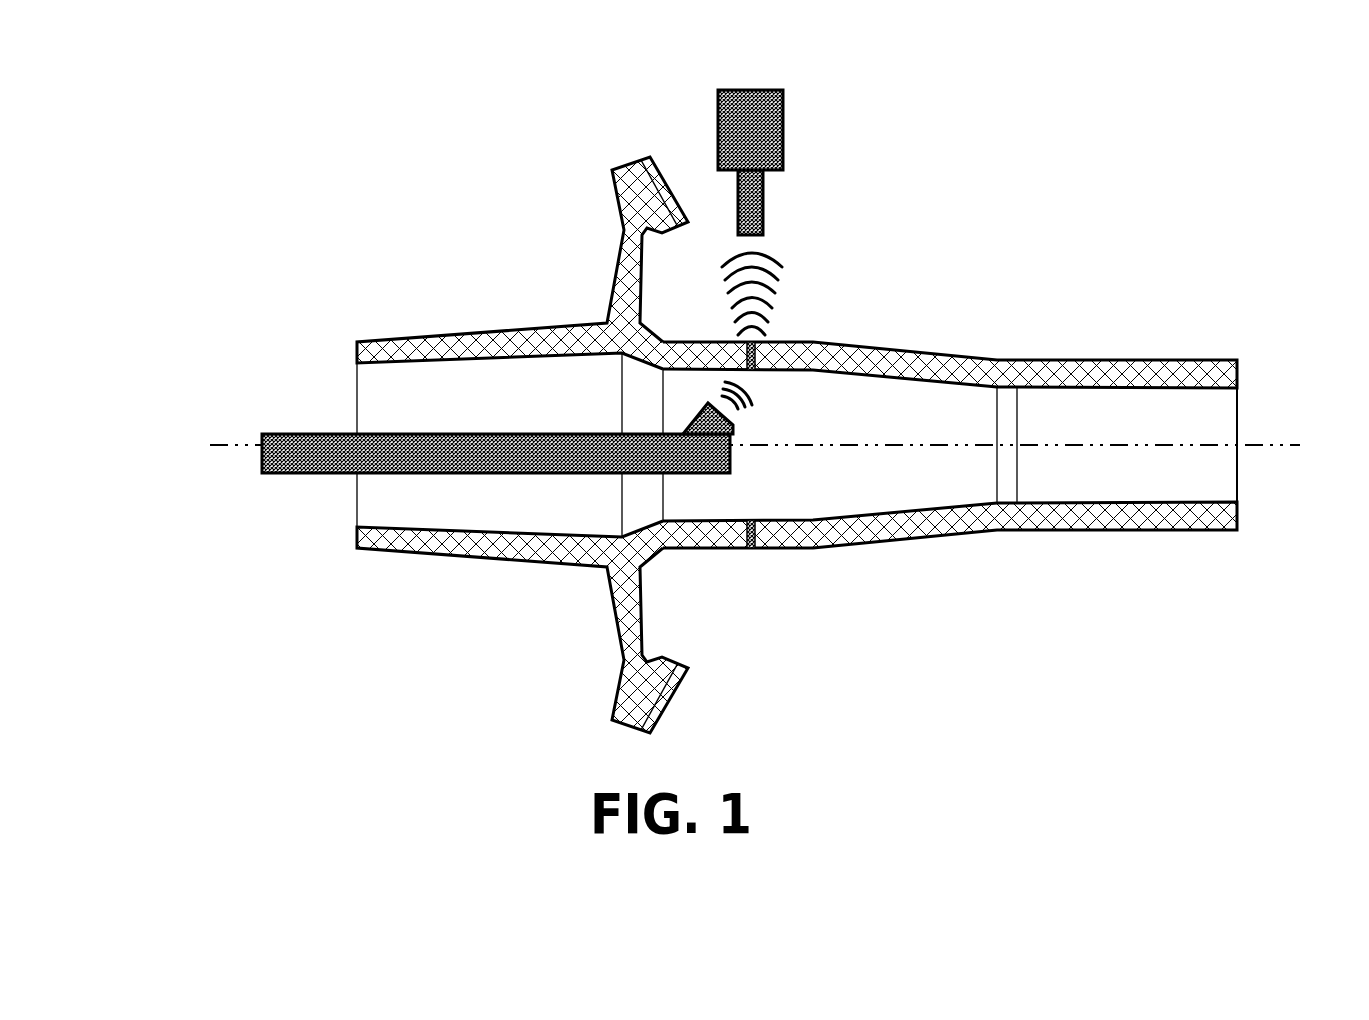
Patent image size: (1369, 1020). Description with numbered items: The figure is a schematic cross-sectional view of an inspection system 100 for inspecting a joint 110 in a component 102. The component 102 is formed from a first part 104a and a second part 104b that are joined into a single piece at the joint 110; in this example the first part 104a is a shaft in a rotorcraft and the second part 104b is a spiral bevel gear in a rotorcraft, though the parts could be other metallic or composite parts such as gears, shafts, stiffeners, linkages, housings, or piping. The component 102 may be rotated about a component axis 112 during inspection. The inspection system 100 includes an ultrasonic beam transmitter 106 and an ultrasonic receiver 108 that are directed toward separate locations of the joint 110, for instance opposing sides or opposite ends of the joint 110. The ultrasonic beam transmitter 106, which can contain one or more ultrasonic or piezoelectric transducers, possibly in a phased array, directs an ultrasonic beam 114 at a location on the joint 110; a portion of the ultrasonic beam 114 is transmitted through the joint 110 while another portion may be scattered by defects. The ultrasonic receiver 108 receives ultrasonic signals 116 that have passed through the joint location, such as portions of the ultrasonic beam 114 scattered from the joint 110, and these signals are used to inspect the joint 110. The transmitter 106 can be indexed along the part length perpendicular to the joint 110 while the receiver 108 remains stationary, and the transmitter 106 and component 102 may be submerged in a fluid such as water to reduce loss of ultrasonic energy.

The inspection system 100 is at (186, 101).
The component 102 is at (380, 303).
The first part 104a is at (1140, 358).
The second part 104b is at (543, 325).
The ultrasonic beam transmitter 106 is at (285, 432).
The ultrasonic receiver 108 is at (785, 150).
The joint 110 is at (757, 352).
The component axis 112 is at (1257, 445).
The ultrasonic beam 114 is at (777, 396).
The ultrasonic signals 116 is at (800, 263).